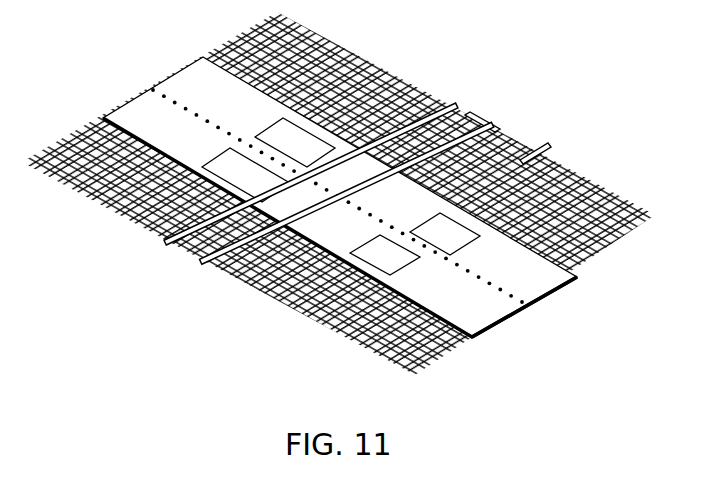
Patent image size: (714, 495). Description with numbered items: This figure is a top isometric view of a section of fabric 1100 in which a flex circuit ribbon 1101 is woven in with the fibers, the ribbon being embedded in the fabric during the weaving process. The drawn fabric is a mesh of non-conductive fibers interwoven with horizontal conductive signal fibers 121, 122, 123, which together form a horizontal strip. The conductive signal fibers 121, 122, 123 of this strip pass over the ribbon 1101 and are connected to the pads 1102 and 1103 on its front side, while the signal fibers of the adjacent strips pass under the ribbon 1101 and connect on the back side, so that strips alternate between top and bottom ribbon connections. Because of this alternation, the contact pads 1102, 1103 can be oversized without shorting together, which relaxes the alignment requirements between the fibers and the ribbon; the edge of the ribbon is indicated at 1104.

The textile-integrated electronic assembly 1100 is at (342, 216).
The ribbon 1101 is at (567, 307).
The pad 1102 is at (168, 142).
The pad 1103 is at (206, 105).
The strip substrate layer 1104 is at (370, 201).
The horizontal signal fiber 121 is at (352, 167).
The horizontal signal fiber 122 is at (524, 114).
The horizontal signal fiber 123 is at (573, 143).